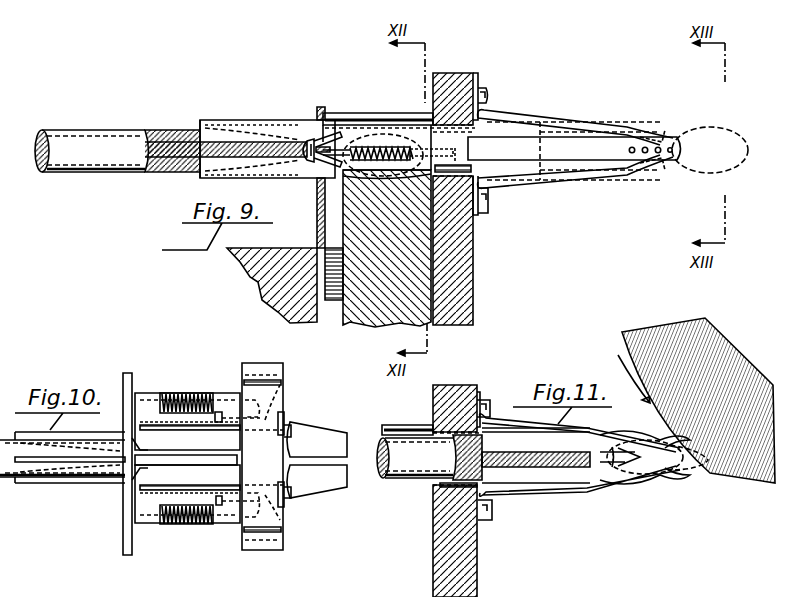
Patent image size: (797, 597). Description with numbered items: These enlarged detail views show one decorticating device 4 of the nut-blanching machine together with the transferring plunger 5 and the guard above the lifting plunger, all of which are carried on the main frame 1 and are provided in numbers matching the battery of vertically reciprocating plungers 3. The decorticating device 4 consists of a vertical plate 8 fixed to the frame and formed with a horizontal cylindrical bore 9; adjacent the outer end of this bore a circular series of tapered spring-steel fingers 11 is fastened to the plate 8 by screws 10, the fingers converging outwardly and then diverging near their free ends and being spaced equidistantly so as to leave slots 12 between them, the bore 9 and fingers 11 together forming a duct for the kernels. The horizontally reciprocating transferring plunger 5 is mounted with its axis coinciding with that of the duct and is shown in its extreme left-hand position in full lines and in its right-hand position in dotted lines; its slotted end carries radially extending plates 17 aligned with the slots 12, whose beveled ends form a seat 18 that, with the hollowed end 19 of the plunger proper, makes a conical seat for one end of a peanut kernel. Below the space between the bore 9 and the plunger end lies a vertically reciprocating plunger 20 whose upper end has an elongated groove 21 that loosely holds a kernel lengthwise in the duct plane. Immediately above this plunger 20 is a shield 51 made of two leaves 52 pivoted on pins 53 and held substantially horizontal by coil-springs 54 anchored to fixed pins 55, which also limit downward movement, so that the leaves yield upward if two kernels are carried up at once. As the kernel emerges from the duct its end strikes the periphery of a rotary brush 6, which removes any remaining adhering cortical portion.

In FIG. 9, the main frame 1 is at (265, 285).
In FIG. 9, the vertically reciprocating plunger 3 is at (387, 248).
In FIG. 9, the decorticating device 4 is at (462, 82).
In FIG. 10, the decorticating device 4 is at (286, 418).
In FIG. 11, the decorticating device 4 is at (462, 392).
In FIG. 9, the transferring plunger 5 is at (108, 135).
In FIG. 10, the transferring plunger 5 is at (47, 478).
In FIG. 11, the transferring plunger 5 is at (412, 470).
In FIG. 11, the rotary brush 6 is at (696, 400).
In FIG. 9, the vertical plate 8 is at (478, 256).
In FIG. 10, the vertical plate 8 is at (280, 520).
In FIG. 11, the vertical plate 8 is at (470, 572).
In FIG. 9, the cylindrical bore 9 is at (462, 138).
In FIG. 10, the cylindrical bore 9 is at (285, 395).
In FIG. 11, the cylindrical bore 9 is at (443, 503).
In FIG. 9, the screw 10 is at (486, 93).
In FIG. 10, the screw 10 is at (292, 493).
In FIG. 11, the screw 10 is at (492, 518).
In FIG. 9, the finger 11 is at (553, 121).
In FIG. 10, the finger 11 is at (317, 460).
In FIG. 11, the finger 11 is at (576, 495).
In FIG. 9, the slot 12 is at (578, 137).
In FIG. 9, the radially extending plate 17 is at (242, 128).
In FIG. 10, the radially extending plate 17 is at (72, 483).
In FIG. 11, the radially extending plate 17 is at (549, 485).
In FIG. 9, the seat 18 is at (320, 142).
In FIG. 10, the seat 18 is at (122, 485).
In FIG. 11, the seat 18 is at (640, 478).
In FIG. 9, the hollowed end 19 is at (310, 141).
In FIG. 11, the hollowed end 19 is at (603, 485).
In FIG. 9, the vertically reciprocating plunger 20 is at (372, 315).
In FIG. 9, the groove 21 is at (383, 176).
In FIG. 9, the shield 51 is at (352, 115).
In FIG. 9, the leaf 52 is at (410, 113).
In FIG. 10, the leaf 52 is at (187, 458).
In FIG. 11, the leaf 52 is at (400, 425).
In FIG. 10, the pin 53 is at (240, 385).
In FIG. 9, the coil-spring 54 is at (373, 162).
In FIG. 10, the coil-spring 54 is at (177, 393).
In FIG. 9, the fixed pin 55 is at (448, 170).
In FIG. 10, the fixed pin 55 is at (281, 380).